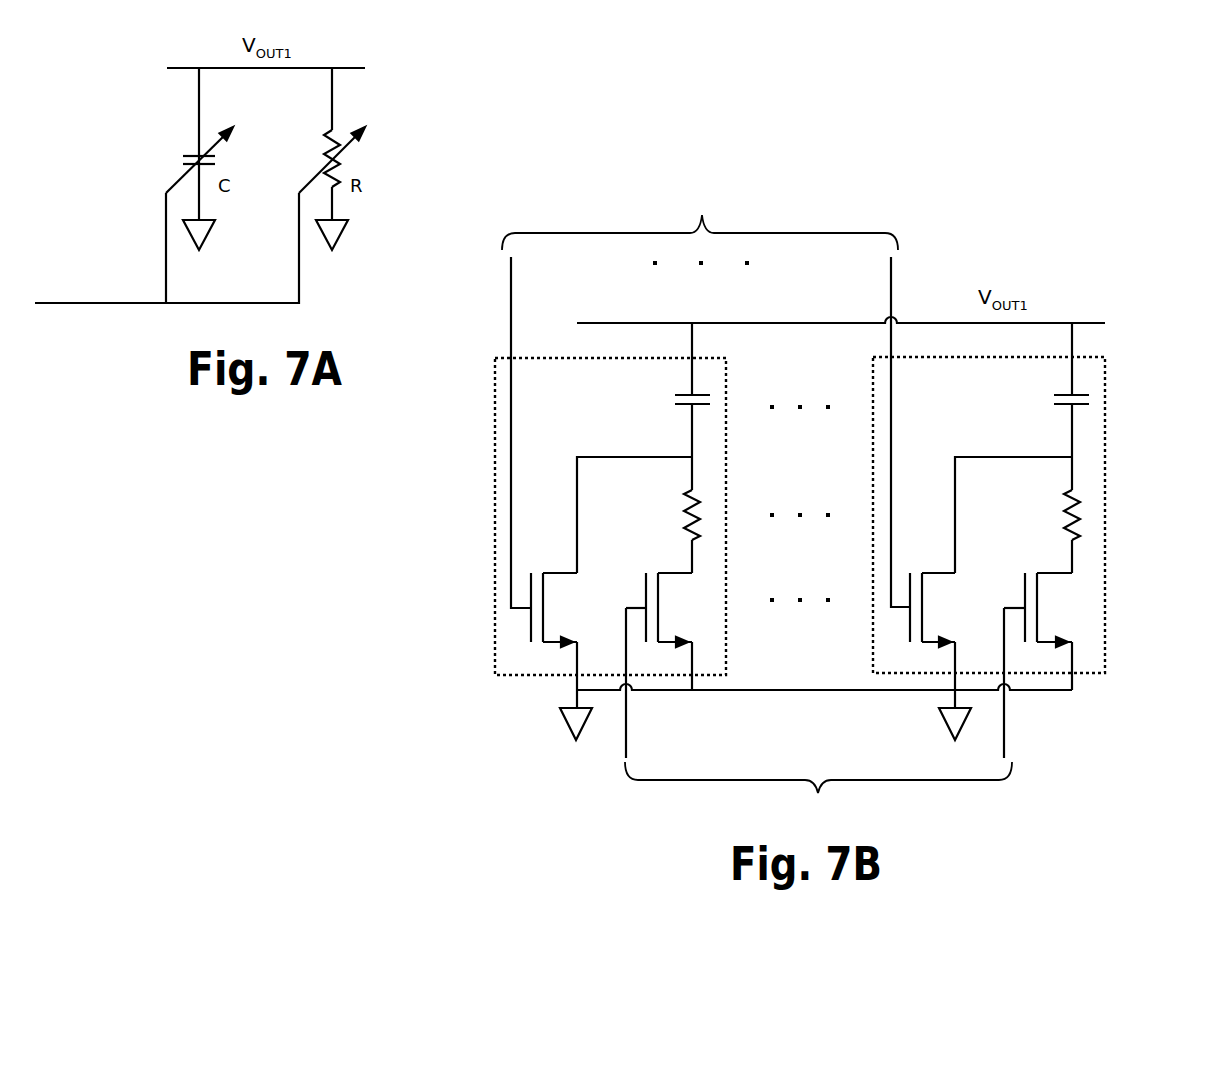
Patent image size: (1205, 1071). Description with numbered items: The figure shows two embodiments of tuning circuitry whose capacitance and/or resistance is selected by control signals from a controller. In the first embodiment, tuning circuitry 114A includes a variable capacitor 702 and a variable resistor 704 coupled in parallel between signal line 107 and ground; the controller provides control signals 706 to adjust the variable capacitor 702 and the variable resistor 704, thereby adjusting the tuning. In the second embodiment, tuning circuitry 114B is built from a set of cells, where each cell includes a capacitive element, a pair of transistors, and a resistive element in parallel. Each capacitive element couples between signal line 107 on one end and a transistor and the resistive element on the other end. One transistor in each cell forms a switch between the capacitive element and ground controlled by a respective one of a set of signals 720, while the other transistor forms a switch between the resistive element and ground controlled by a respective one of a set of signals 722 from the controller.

In FIG. 7A, the signal line 107 is at (352, 68).
In FIG. 7B, the signal line 107 is at (1084, 322).
In FIG. 7A, the tuning circuitry 114A is at (135, 115).
In FIG. 7B, the tuning circuitry 114B is at (521, 768).
In FIG. 7A, the variable capacitor 702 is at (215, 155).
In FIG. 7A, the variable resistor 704 is at (333, 167).
In FIG. 7A, the control signals 706 is at (95, 303).
In FIG. 7B, the set of signals 720 is at (700, 219).
In FIG. 7B, the set of signals 722 is at (818, 793).